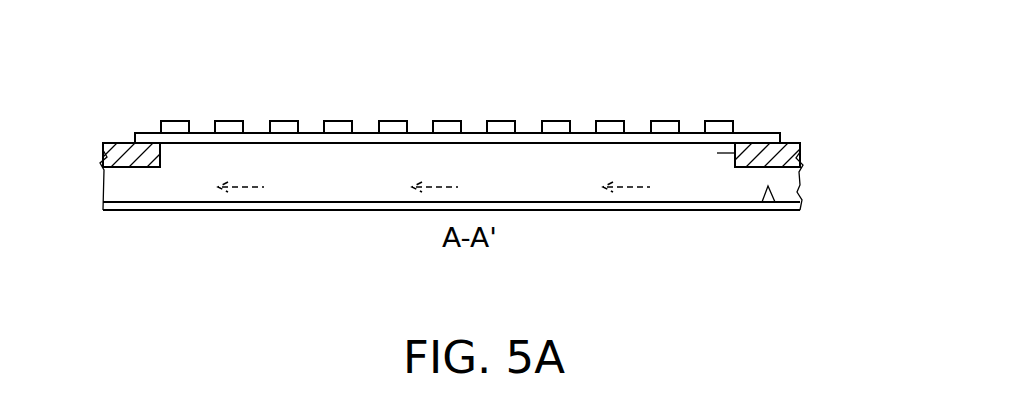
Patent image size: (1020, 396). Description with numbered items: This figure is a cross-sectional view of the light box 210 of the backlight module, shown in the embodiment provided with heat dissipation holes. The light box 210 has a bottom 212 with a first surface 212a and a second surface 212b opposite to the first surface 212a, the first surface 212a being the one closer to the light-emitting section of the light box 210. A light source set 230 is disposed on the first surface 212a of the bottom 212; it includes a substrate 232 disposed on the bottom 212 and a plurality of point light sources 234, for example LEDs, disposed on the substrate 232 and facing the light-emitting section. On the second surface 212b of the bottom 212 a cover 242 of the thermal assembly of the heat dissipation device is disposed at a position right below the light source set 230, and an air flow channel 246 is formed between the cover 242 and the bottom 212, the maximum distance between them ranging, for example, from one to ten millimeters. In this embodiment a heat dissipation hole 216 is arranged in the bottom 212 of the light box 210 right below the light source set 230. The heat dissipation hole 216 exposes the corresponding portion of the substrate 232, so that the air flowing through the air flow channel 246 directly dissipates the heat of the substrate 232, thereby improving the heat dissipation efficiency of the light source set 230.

The light box 210 is at (451, 176).
The bottom 212 is at (800, 158).
The first surface 212a is at (119, 134).
The second surface 212b is at (124, 177).
The heat dissipation hole 216 is at (733, 152).
The light source set 230 is at (437, 78).
The substrate 232 is at (152, 138).
The point light source 234 is at (180, 127).
The cover 242 is at (715, 205).
The air flow channel 246 is at (769, 200).